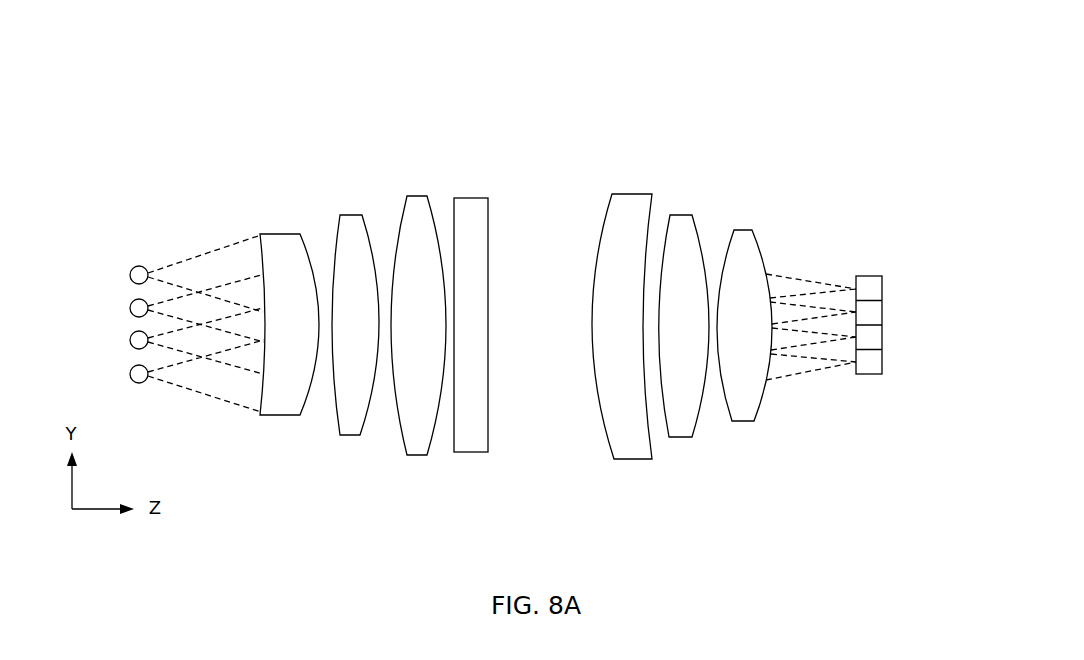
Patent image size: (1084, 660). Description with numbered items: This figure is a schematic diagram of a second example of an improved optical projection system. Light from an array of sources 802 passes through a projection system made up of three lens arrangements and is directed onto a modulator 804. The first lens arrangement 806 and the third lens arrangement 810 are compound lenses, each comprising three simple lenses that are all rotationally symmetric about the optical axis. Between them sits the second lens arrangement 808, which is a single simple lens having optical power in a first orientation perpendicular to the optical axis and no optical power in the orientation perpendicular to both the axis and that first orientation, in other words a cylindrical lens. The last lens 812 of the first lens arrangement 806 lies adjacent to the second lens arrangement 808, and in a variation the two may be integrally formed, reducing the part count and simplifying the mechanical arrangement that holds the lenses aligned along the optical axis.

The array of sources 802 is at (112, 267).
The modulator 804 is at (883, 249).
The first lens arrangement 806 is at (342, 307).
The second lens arrangement 808 is at (463, 178).
The third lens arrangement 810 is at (588, 178).
The last lens 812 is at (413, 454).